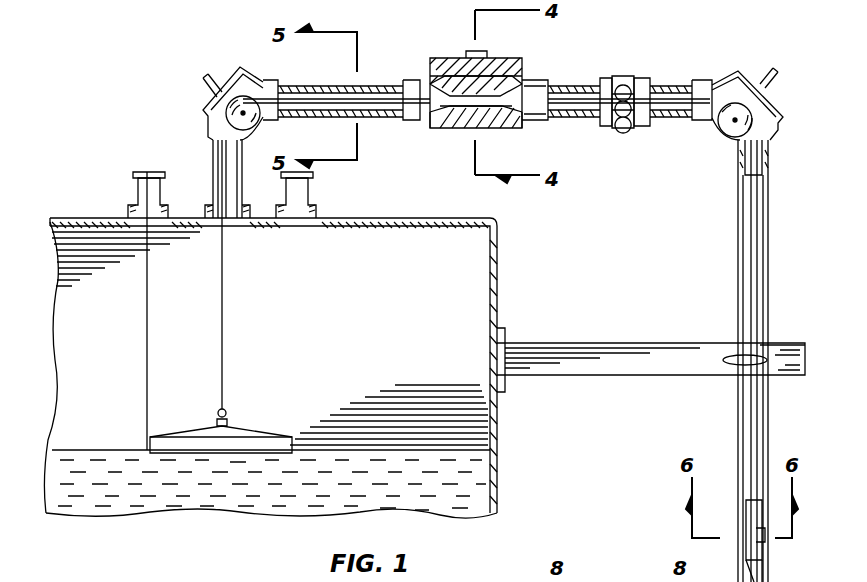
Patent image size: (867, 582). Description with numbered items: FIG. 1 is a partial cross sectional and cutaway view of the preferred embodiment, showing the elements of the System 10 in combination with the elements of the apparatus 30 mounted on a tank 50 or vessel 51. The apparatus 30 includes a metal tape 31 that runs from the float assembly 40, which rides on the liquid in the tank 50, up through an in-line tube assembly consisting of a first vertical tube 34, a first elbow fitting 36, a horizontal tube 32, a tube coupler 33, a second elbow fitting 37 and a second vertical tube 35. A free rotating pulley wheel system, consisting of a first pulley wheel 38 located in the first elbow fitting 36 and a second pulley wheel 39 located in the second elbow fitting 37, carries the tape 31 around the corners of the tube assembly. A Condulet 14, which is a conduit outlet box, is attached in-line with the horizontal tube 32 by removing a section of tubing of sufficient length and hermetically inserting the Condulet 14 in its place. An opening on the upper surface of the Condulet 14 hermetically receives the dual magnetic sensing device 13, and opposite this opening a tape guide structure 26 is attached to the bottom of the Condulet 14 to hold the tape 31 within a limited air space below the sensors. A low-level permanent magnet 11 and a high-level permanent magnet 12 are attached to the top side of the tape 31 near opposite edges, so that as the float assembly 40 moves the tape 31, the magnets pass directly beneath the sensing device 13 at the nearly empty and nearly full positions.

The System 10 is at (594, 62).
The low-level permanent magnet 11 is at (764, 540).
The high-level permanent magnet 12 is at (362, 86).
The dual magnetic sensing device 13 is at (522, 68).
The Condulet 14 is at (540, 84).
The tape guide structure 26 is at (448, 132).
The apparatus 30 is at (655, 185).
The metal tape 31 is at (240, 212).
The horizontal tube 32 is at (326, 84).
The tube coupler 33 is at (632, 82).
The first vertical tube 34 is at (213, 178).
The second vertical tube 35 is at (740, 262).
The first elbow fitting 36 is at (243, 66).
The second elbow fitting 37 is at (738, 58).
The first pulley wheel 38 is at (213, 108).
The second pulley wheel 39 is at (725, 135).
The float assembly 40 is at (228, 458).
The tank 50 is at (500, 322).
The vessel 51 is at (561, 300).